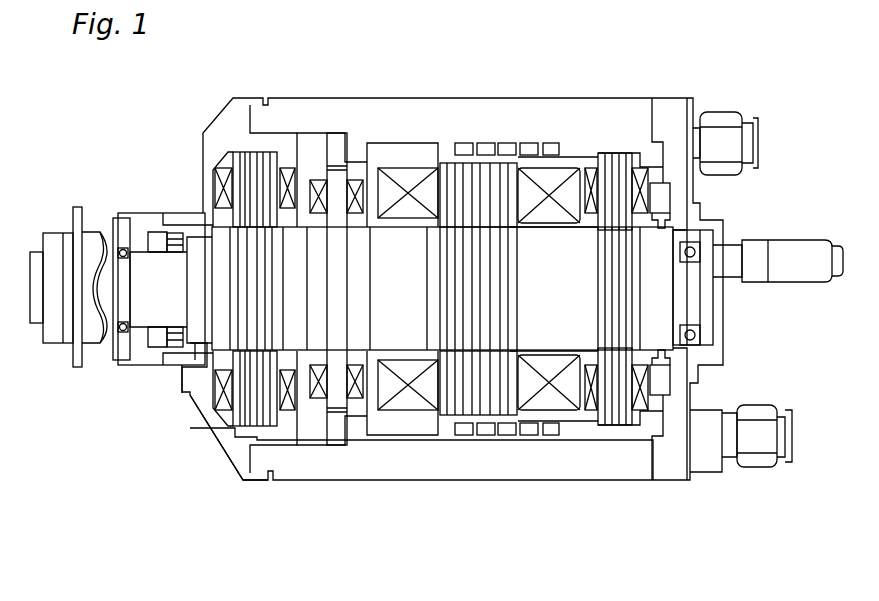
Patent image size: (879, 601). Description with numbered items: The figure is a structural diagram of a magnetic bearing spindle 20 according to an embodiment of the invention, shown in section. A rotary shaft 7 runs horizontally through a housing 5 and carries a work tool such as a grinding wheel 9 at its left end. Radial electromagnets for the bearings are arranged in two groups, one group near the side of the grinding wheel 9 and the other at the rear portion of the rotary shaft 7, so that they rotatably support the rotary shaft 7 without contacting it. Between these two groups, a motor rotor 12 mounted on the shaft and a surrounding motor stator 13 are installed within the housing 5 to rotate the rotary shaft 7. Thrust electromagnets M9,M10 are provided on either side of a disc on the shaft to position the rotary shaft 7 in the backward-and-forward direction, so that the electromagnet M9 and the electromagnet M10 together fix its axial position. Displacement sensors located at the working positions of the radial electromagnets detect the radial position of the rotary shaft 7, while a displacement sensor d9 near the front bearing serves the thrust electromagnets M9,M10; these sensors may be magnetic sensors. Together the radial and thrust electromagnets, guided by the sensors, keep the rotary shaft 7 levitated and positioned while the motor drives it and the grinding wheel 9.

The housing 5 is at (408, 120).
The rotary shaft 7 is at (35, 327).
The grinding wheel 9 is at (76, 368).
The motor rotor 12 is at (482, 253).
The motor stator 13 is at (470, 180).
The spindle 20 is at (220, 486).
The displacement sensor d9 is at (173, 223).
The thrust electromagnets M9,M10 is at (301, 238).
The thrust electromagnet M9 is at (318, 196).
The thrust electromagnet M10 is at (355, 162).